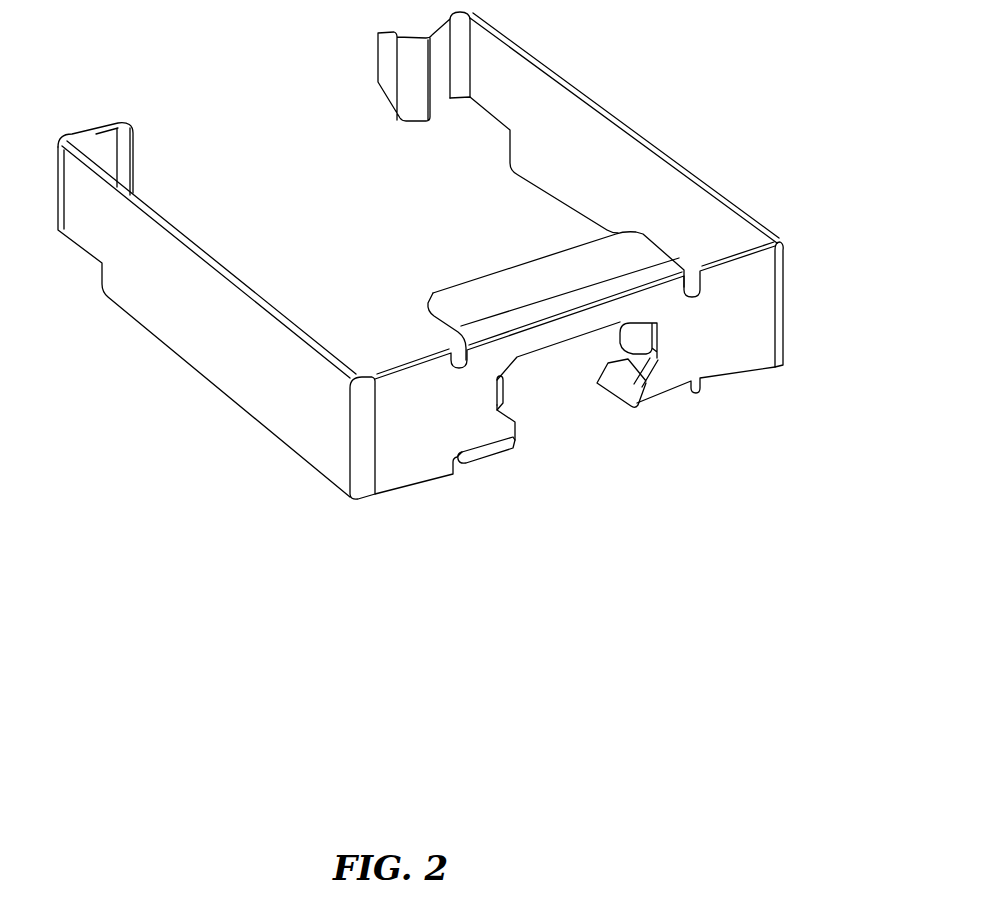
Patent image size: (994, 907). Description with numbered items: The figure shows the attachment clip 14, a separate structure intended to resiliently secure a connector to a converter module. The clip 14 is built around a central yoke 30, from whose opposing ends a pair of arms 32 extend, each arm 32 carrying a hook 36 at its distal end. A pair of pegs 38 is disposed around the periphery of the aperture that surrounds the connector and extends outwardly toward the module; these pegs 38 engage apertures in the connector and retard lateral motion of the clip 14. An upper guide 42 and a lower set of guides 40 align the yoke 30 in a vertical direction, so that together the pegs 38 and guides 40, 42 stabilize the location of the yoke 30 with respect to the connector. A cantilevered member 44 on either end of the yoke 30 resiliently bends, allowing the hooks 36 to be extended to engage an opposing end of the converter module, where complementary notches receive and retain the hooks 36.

The attachment clip 14 is at (424, 255).
The central yoke 30 is at (529, 287).
The arms 32 is at (190, 243).
The hooks 36 is at (134, 151).
The pegs 38 is at (503, 385).
The lower guides 40 is at (523, 438).
The upper guide 42 is at (430, 290).
The cantilevered member 44 is at (373, 377).